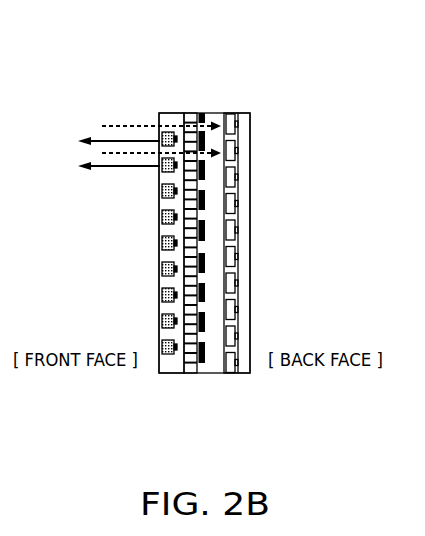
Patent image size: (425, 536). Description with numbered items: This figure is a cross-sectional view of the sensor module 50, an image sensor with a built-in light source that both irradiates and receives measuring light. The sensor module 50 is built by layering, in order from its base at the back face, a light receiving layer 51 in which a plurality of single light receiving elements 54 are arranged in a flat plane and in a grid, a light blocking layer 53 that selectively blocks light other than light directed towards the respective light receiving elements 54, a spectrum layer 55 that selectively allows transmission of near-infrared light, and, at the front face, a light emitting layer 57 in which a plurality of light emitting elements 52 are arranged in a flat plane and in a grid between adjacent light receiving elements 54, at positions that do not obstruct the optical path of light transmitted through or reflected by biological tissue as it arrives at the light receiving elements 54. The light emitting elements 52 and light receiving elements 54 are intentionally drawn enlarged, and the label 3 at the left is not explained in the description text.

The sensor module 50 is at (119, 76).
The light emitting layer 57 is at (167, 118).
The spectrum layer 55 is at (193, 115).
The light receiving layer 51 is at (242, 117).
The light emitting elements 52 is at (162, 242).
The light blocking layer 53 is at (212, 368).
The light receiving elements 54 is at (238, 125).
The light 3 is at (113, 139).